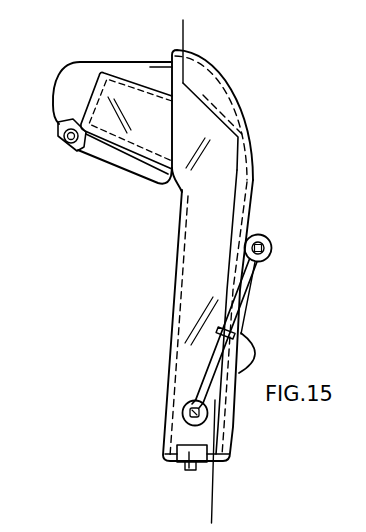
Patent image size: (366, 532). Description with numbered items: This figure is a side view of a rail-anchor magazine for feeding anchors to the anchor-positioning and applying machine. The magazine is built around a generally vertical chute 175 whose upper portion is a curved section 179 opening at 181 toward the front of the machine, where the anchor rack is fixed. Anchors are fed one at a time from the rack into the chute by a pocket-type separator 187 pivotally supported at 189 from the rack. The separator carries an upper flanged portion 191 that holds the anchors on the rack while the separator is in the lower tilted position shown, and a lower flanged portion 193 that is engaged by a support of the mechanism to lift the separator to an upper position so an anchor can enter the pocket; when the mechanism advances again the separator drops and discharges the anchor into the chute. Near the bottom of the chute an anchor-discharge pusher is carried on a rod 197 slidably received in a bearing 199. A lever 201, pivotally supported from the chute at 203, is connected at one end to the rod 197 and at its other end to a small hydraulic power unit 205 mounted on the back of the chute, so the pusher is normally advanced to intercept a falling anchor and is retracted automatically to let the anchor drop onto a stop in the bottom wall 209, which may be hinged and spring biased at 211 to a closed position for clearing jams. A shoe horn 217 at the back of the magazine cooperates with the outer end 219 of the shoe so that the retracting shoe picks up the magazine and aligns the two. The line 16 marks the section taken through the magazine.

The section line 16- 16 is at (183, 30).
The chute 175 is at (252, 204).
The curved section 179 is at (221, 80).
The opening 181 is at (168, 62).
The pocket-type separator 187 is at (121, 138).
The pivot of separator 189 is at (65, 147).
The upper flanged portion 191 is at (65, 83).
The lower flanged portion 193 is at (147, 178).
The rod 197 is at (187, 400).
The bearing 199 is at (183, 408).
The lever 201 is at (211, 388).
The lever pivot 203 is at (236, 335).
The hydraulic power unit 205 is at (272, 248).
The bottom wall 209 is at (222, 468).
The hinge and spring bias 211 is at (184, 472).
The shoe horn 217 is at (241, 333).
The outer end of shoe 219 is at (252, 360).